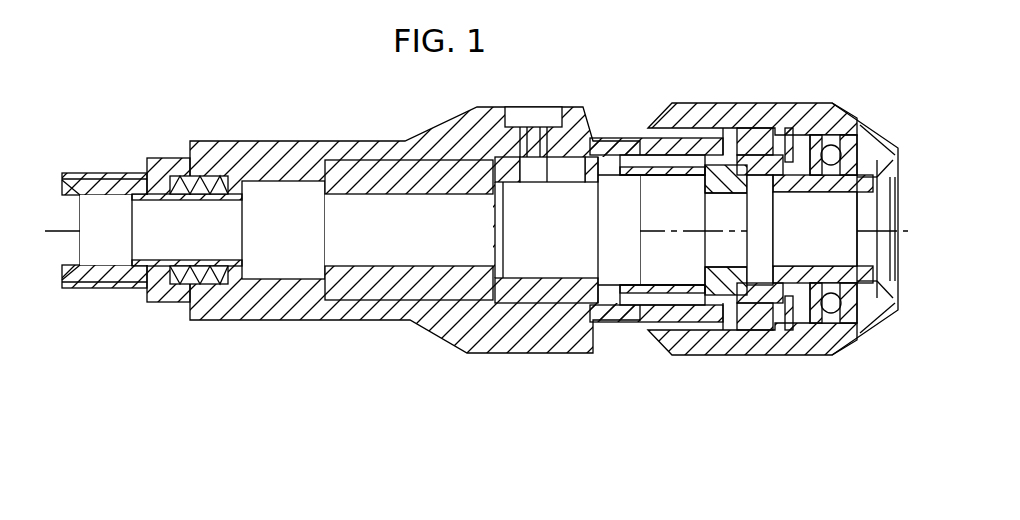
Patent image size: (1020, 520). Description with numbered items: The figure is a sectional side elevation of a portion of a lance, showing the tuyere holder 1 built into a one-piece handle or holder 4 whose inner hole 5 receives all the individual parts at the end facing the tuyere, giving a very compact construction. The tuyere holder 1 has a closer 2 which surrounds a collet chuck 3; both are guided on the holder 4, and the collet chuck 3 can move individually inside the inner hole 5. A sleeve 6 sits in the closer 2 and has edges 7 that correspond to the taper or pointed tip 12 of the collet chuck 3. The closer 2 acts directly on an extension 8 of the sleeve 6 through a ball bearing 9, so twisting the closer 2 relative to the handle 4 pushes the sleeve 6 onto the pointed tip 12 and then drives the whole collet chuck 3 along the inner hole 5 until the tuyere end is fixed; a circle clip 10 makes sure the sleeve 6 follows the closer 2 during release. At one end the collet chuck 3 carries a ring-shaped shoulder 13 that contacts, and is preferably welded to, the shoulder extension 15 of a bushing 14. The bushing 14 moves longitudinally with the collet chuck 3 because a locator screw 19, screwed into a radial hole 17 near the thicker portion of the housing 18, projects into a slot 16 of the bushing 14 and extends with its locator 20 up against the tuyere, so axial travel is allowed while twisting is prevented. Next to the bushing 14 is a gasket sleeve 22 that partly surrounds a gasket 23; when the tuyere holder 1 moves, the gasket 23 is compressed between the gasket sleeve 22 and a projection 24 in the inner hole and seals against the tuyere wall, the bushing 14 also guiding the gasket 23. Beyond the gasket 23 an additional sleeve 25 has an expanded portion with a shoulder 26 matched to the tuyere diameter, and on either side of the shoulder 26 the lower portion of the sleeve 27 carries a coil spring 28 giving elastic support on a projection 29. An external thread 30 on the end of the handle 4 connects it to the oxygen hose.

The tuyere holder 1 is at (396, 351).
The closer 2 is at (835, 345).
The collet chuck 3 is at (700, 348).
The handle or holder 4 is at (545, 340).
The inner hole 5 is at (657, 160).
The sleeve 6 is at (808, 142).
The edges 7 is at (747, 173).
The extension 8 is at (790, 128).
The ball bearing 9 is at (830, 314).
The circle clip 10 is at (790, 332).
The taper or pointed tip 12 is at (750, 292).
The ring-shaped shoulder 13 is at (617, 153).
The bushing 14 is at (565, 300).
The shoulder extension 15 is at (597, 143).
The slot 16 is at (535, 112).
The radial hole 17 is at (500, 165).
The housing 18 is at (496, 340).
The locator screw 19 is at (527, 108).
The locator 20 is at (533, 185).
The gasket sleeve 22 is at (465, 165).
The gasket 23 is at (352, 173).
The projection 24 is at (320, 175).
The additional sleeve 25 is at (267, 283).
The shoulder 26 is at (233, 182).
The sleeve 27 is at (175, 285).
The coil spring 28 is at (200, 287).
The projection 29 is at (168, 182).
The external thread 30 is at (72, 290).